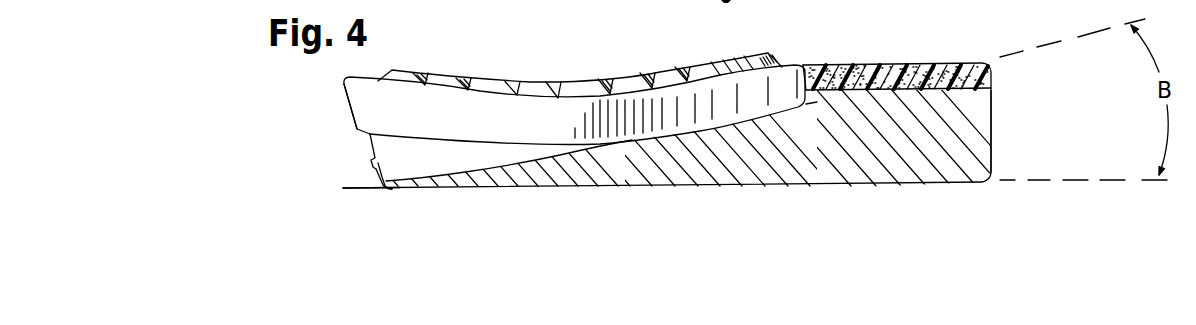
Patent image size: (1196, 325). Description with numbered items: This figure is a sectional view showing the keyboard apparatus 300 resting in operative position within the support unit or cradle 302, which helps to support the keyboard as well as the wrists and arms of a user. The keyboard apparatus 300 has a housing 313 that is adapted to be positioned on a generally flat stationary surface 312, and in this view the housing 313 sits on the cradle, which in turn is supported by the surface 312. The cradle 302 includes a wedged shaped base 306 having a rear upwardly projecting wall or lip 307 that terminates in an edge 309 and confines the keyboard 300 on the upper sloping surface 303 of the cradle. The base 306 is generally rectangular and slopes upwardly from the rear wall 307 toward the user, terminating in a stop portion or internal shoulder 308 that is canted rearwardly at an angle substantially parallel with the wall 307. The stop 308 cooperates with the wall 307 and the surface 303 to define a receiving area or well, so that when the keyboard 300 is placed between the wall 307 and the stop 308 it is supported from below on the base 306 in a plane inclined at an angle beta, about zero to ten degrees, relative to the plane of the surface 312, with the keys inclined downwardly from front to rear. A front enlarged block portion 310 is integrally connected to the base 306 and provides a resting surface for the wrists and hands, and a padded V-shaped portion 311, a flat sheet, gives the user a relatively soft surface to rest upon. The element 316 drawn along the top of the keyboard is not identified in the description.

The keyboard apparatus 300 is at (345, 134).
The support unit 302 is at (1010, 159).
The upper sloping surface 303 is at (534, 158).
The wedged shaped base 306 is at (623, 162).
The rear upwardly projecting wall 307 is at (388, 189).
The stop portion 308 is at (806, 100).
The edge 309 is at (371, 162).
The front enlarged block portion 310 is at (931, 166).
The padded V-shaped portion 311 is at (998, 66).
The surface 312 is at (343, 188).
The housing 313 is at (345, 97).
The grip strip 316 is at (476, 63).